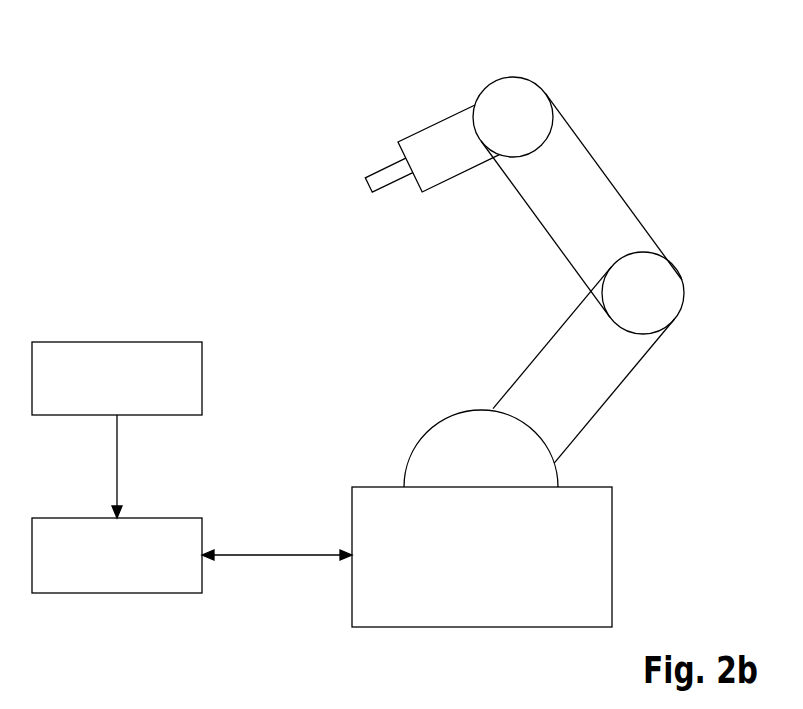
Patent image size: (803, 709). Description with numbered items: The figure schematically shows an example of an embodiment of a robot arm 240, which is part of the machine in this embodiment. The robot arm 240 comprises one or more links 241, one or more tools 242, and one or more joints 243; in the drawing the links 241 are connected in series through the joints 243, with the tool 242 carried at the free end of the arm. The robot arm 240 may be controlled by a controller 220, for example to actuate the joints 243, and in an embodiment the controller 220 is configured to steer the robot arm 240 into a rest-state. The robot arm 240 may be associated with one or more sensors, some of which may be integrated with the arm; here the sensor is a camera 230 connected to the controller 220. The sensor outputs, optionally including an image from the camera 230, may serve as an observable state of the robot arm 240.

The controller 220 is at (110, 594).
The camera 230 is at (75, 340).
The robot arm 240 is at (612, 101).
The links 241 is at (440, 137).
The tools 242 is at (380, 170).
The joints 243 is at (515, 92).